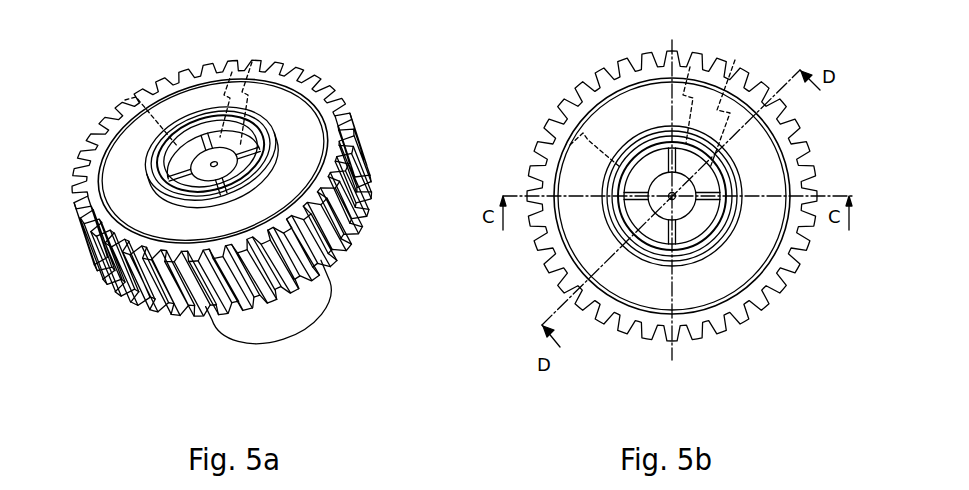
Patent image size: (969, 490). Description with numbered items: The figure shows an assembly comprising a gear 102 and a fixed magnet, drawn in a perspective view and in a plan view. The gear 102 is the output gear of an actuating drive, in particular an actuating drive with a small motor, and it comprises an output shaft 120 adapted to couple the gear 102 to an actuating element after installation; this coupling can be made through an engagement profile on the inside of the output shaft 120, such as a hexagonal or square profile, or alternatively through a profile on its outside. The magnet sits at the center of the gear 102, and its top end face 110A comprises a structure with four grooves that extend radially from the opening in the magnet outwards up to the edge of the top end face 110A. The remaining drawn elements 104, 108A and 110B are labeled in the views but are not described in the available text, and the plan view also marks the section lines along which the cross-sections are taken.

In FIG. 5A, the gear 102 is at (153, 308).
In FIG. 5B, the gear 102 is at (781, 306).
In FIG. 5A, the hub 104 is at (211, 157).
In FIG. 5B, the hub 104 is at (710, 265).
In FIG. 5A, the first tab 108A is at (252, 62).
In FIG. 5B, the first tab 108A is at (735, 60).
In FIG. 5A, the top end face of the magnet 110A is at (112, 108).
In FIG. 5B, the top end face of the magnet 110A is at (563, 152).
In FIG. 5A, the third tab 110B is at (232, 72).
In FIG. 5B, the third tab 110B is at (690, 67).
In FIG. 5A, the output shaft 120 is at (338, 290).